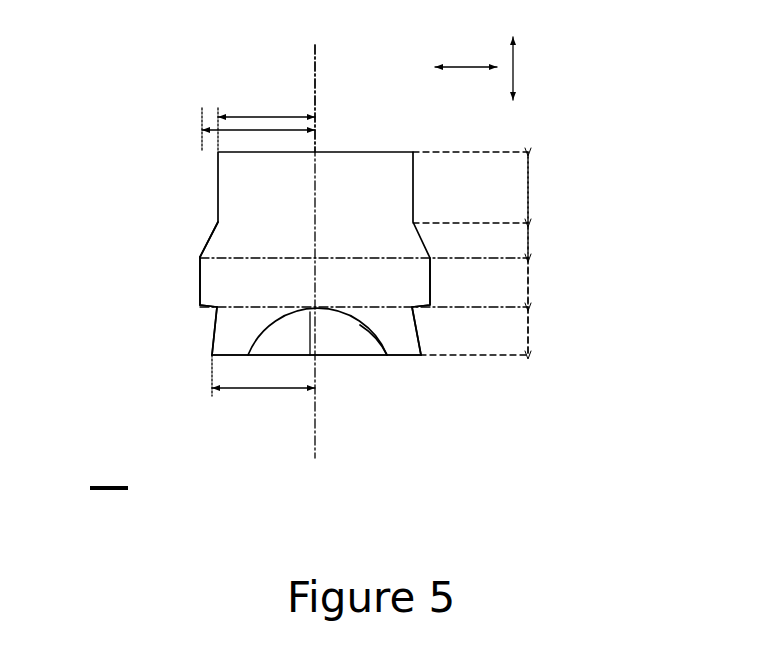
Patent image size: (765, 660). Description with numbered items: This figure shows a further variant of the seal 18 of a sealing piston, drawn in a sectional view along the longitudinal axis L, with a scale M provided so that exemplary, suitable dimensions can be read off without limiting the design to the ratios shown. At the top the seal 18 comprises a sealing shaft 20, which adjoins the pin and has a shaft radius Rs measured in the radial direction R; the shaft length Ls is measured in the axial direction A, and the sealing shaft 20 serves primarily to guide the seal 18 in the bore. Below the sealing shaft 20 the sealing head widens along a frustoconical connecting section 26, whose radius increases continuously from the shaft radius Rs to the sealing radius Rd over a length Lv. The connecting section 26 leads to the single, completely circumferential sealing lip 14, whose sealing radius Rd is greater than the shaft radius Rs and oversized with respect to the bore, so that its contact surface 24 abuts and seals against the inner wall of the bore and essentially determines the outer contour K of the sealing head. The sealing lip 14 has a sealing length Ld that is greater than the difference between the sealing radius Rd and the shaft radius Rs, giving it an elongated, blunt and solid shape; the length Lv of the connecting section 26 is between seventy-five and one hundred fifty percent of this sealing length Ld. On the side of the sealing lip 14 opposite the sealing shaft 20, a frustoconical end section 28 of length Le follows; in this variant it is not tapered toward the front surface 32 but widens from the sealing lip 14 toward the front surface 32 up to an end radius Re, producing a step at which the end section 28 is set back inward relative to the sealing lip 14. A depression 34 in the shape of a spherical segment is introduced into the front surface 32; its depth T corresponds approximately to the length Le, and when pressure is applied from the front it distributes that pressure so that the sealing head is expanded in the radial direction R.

The seal 18 is at (160, 133).
The sealing shaft 20 is at (400, 247).
The sealing lip 14 is at (388, 297).
The connecting section 26 is at (203, 247).
The contact surface 24 is at (192, 308).
The end section 28 is at (212, 340).
The front surface 32 is at (378, 357).
The depression 34 is at (340, 348).
The outer contour K is at (200, 297).
The depth T is at (308, 338).
The longitudinal axis L is at (315, 100).
The radial direction R is at (450, 70).
The axial direction A is at (517, 80).
The shaft radius Rs is at (278, 77).
The sealing radius Rd is at (224, 128).
The end radius Re is at (242, 390).
The shaft length Ls is at (530, 178).
The length of the connecting section Lv is at (530, 243).
The sealing length Ld is at (530, 288).
The length of the end section Le is at (528, 340).
The scale M is at (105, 497).